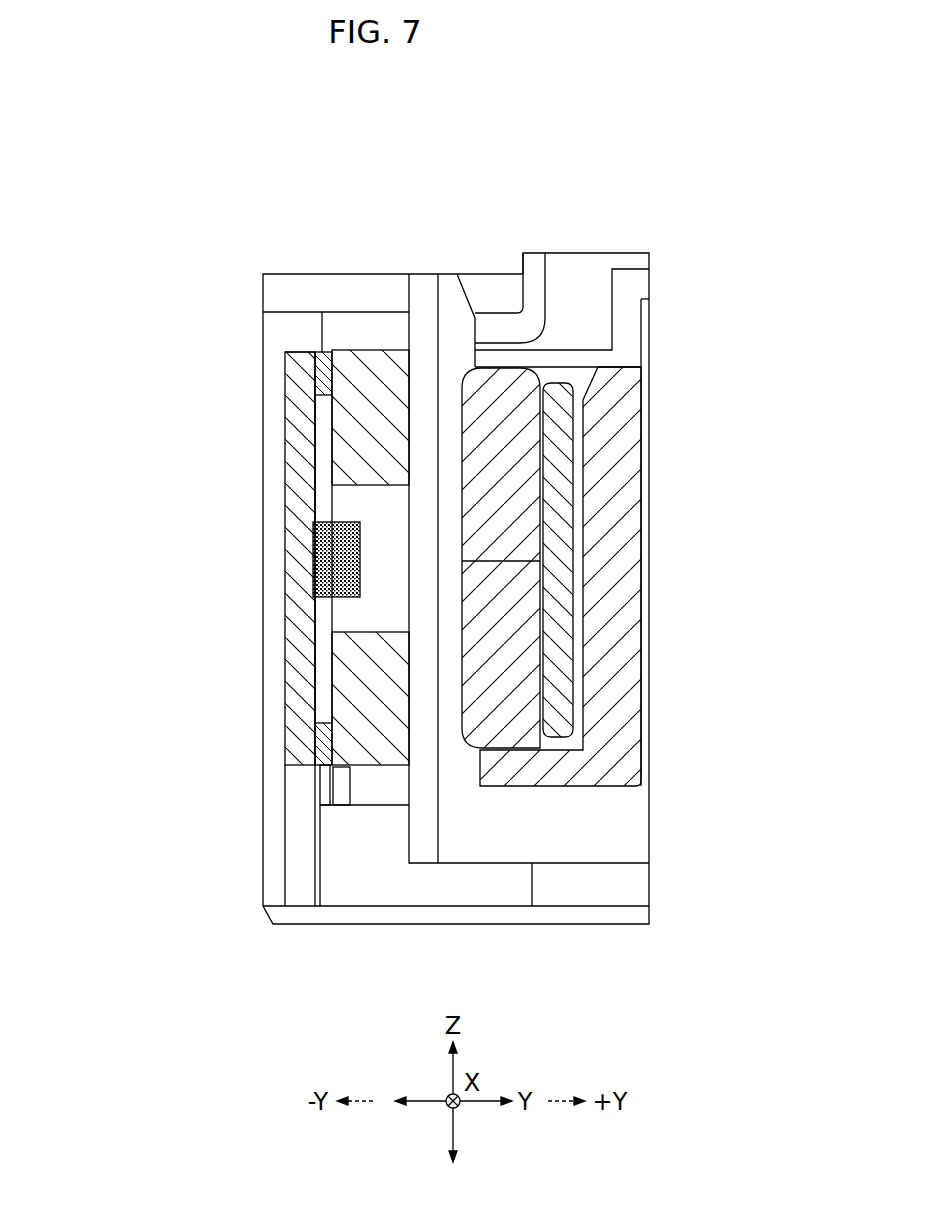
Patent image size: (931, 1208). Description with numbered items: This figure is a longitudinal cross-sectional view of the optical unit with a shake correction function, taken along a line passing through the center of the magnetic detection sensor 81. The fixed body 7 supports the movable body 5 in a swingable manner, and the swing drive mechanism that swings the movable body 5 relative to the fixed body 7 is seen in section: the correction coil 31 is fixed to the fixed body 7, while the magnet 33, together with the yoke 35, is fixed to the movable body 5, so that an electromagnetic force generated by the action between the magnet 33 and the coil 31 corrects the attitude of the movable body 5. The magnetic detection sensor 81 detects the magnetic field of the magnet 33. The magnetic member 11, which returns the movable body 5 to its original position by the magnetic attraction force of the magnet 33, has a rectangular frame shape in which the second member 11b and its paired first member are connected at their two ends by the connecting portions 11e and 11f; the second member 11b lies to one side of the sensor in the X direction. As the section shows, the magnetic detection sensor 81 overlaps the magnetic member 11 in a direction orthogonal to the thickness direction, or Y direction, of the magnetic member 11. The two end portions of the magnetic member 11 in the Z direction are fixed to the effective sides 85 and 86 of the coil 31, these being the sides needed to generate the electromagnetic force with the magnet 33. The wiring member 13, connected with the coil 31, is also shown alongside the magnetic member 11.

The movable body 5 is at (641, 738).
The fixed body 7 is at (340, 273).
The magnetic member 11 is at (307, 737).
The connecting portion 11e is at (284, 364).
The second member 11b is at (313, 673).
The connecting portion 11f is at (310, 750).
The wiring member 13 is at (305, 603).
The correction coil 31 is at (367, 367).
The magnet 33 is at (510, 457).
The yoke 35 is at (558, 468).
The magnetic detection sensor 81 is at (340, 522).
The effective side 85 is at (337, 352).
The effective side 86 is at (333, 768).